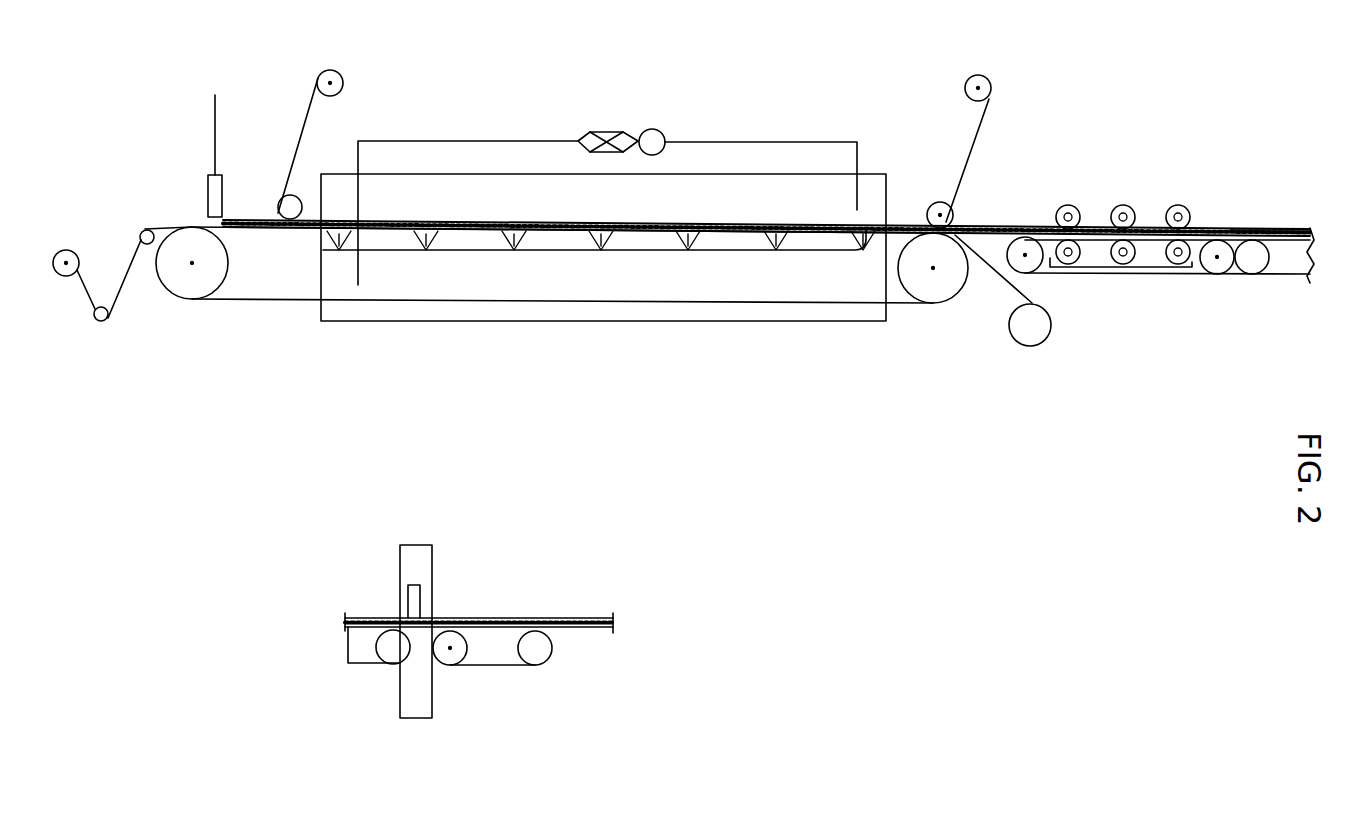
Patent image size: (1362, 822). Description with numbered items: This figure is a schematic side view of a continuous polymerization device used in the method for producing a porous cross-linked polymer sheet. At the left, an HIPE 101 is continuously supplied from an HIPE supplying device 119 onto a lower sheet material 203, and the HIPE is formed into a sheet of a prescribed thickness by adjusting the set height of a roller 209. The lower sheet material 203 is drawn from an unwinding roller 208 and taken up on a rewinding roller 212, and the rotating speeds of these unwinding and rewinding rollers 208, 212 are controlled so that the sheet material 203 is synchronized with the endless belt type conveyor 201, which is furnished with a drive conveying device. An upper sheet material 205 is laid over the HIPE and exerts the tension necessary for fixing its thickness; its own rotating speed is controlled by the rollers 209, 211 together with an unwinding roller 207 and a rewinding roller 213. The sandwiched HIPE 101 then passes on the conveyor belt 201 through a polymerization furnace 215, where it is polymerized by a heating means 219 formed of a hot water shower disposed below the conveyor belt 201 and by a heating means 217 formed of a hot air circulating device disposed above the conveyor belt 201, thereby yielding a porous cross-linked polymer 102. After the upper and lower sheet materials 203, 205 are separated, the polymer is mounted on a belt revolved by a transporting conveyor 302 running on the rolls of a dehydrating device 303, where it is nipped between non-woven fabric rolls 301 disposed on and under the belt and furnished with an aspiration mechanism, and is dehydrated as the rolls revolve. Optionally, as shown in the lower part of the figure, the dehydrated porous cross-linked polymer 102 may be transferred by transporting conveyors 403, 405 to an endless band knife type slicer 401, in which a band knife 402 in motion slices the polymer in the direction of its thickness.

The HIPE 101 is at (260, 229).
The porous cross-linked polymer 102 is at (1230, 229).
The HIPE supplying device 119 is at (208, 197).
The endless belt type conveyor 201 is at (253, 301).
The sheet material 203 is at (128, 270).
The sheet material 205 is at (297, 139).
The unwinding roller 207 is at (343, 83).
The unwinding roller 208 is at (68, 251).
The roller 209 is at (278, 208).
The roller 211 is at (949, 208).
The rewinding roller 212 is at (1028, 338).
The rewinding roller 213 is at (992, 88).
The polymerization furnace 215 is at (602, 312).
The heating means 217 is at (601, 130).
The heating means 219 is at (485, 241).
The non-woven fabric roll furnished with aspiration mechanism 301 is at (1076, 206).
The transporting conveyor 302 is at (1225, 273).
The dehydrating device 303 is at (1126, 277).
The slicer 401 is at (417, 718).
The band knife 402 is at (423, 613).
The transporting conveyor 403 is at (393, 650).
The transporting conveyor 405 is at (537, 650).